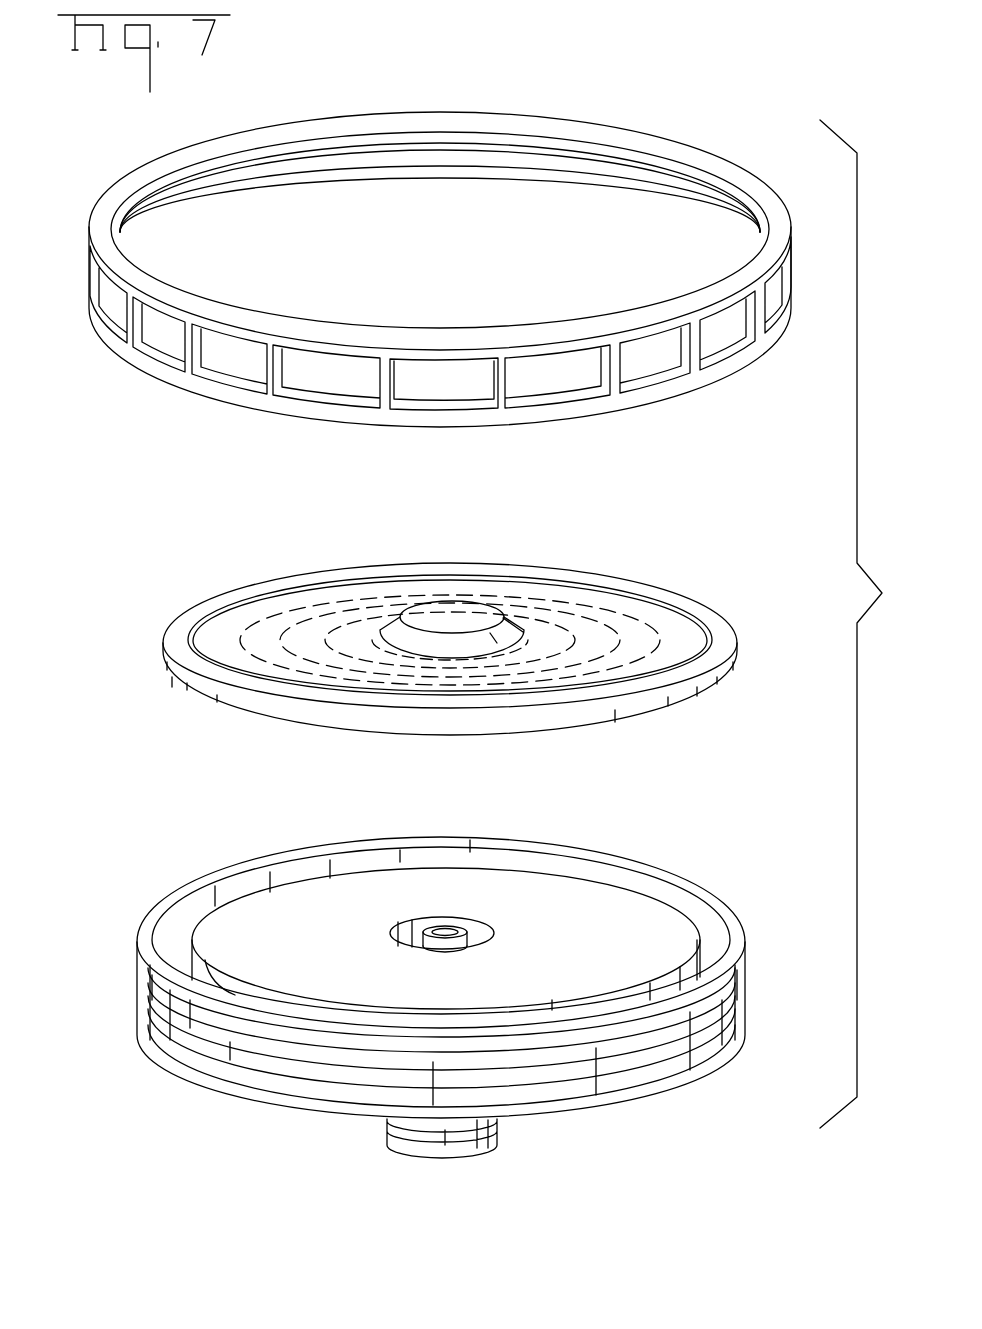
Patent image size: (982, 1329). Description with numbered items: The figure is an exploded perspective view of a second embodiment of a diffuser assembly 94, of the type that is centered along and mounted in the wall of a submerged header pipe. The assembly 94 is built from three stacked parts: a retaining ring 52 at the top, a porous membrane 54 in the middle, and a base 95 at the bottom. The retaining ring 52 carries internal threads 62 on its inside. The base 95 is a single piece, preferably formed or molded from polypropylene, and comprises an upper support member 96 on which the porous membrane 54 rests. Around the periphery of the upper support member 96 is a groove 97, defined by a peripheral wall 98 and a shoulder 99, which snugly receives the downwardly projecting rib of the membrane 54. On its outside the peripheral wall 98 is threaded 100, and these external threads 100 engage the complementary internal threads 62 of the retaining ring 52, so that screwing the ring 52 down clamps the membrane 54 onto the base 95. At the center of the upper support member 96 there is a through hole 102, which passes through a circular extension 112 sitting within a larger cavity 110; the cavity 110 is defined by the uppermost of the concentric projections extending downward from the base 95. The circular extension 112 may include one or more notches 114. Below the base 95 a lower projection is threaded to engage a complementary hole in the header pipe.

The retaining ring 52 is at (683, 130).
The internal threads 62 is at (212, 187).
The porous membrane 54 is at (631, 570).
The diffuser assembly 94 is at (871, 624).
The base 95 is at (408, 963).
The upper support member 96 is at (620, 896).
The groove 97 is at (175, 950).
The peripheral wall 98 is at (298, 870).
The shoulder 99 is at (208, 967).
The threads 100 is at (140, 990).
The through hole 102 is at (448, 925).
The cavity 110 is at (483, 935).
The circular extension 112 is at (430, 922).
The notches 114 is at (440, 950).